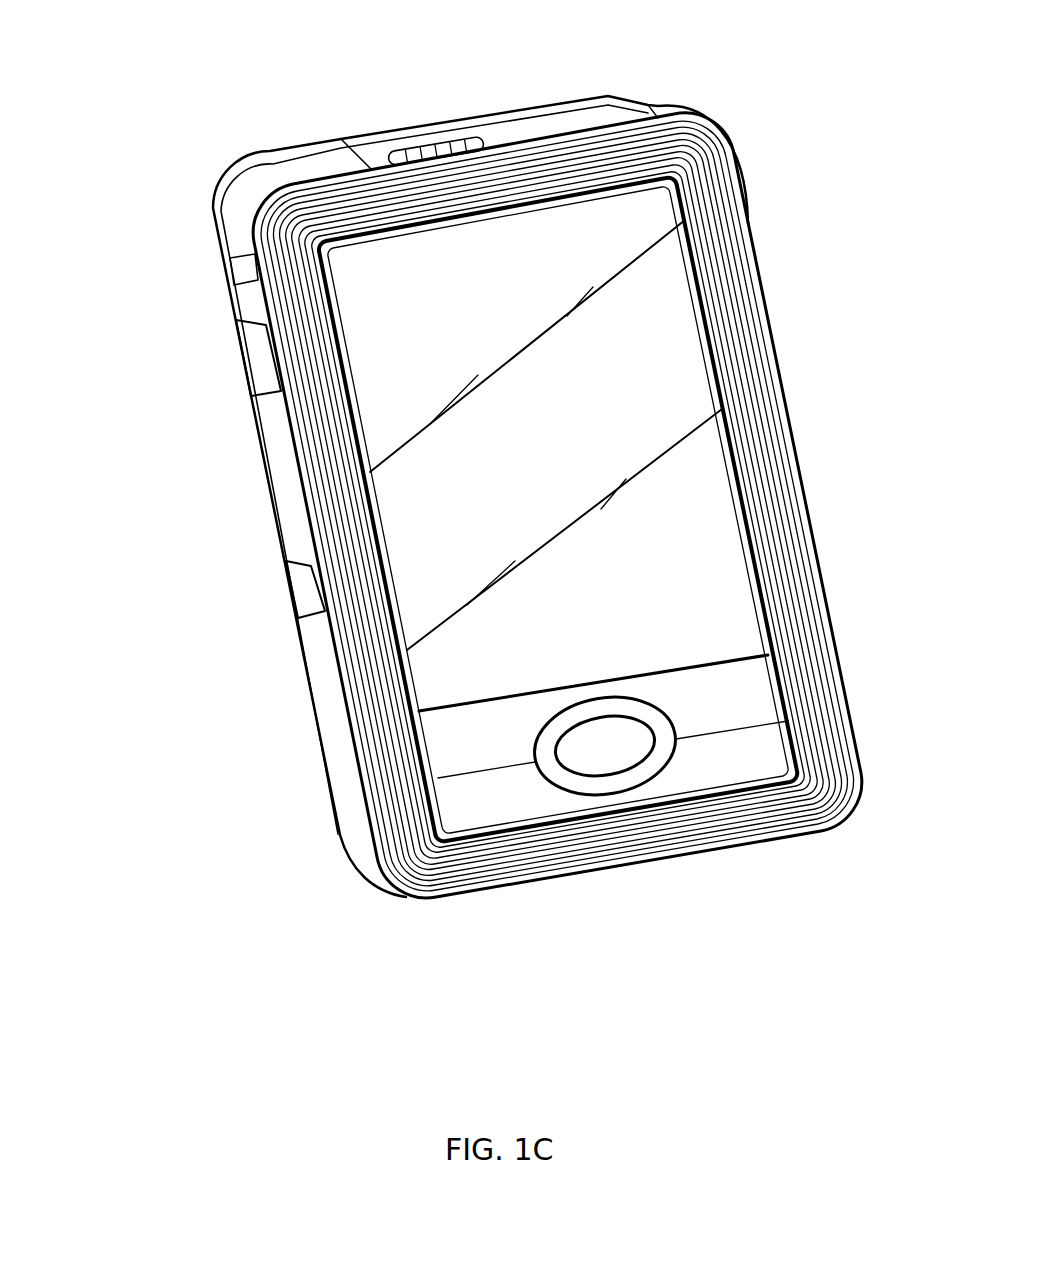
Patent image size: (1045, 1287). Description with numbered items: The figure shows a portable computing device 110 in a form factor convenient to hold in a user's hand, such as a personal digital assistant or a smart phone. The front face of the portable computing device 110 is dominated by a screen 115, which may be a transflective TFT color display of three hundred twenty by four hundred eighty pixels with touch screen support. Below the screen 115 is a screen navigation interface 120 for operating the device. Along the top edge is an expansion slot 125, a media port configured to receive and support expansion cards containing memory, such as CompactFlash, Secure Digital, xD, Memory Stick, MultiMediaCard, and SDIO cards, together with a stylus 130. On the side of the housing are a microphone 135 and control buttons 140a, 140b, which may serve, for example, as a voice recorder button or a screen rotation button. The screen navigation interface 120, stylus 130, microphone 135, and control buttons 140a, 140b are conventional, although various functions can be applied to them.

The portable computing device 110 is at (494, 504).
The screen 115 is at (684, 322).
The screen navigation interface 120 is at (583, 782).
The expansion slot 125 is at (468, 114).
The stylus 130 is at (653, 93).
The microphone 135 is at (242, 256).
The control button 140a is at (232, 346).
The control button 140b is at (278, 568).